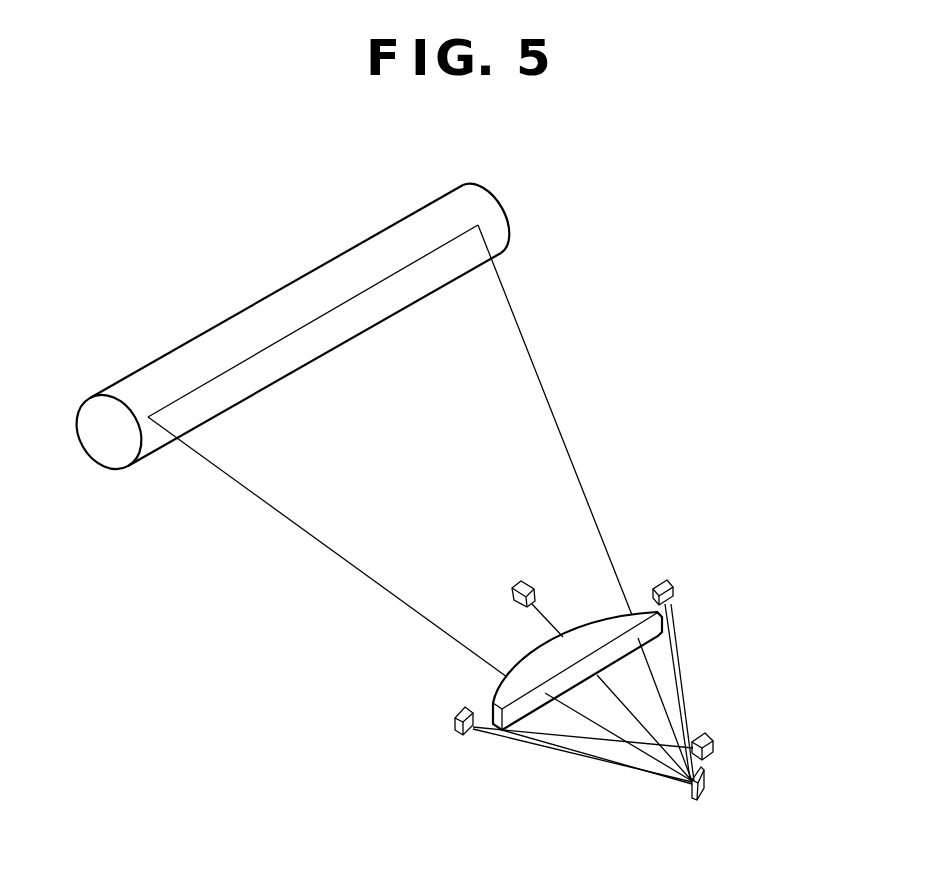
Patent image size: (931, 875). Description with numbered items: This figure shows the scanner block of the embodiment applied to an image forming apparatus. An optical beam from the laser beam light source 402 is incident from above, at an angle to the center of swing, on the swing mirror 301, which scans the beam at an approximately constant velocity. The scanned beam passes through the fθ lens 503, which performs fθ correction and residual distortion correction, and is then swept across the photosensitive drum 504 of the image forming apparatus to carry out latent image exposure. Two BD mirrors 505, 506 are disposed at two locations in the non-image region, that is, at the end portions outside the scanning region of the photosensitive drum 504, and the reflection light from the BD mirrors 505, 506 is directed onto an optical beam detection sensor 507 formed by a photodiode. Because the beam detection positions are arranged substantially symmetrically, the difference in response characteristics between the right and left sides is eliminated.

The photosensitive drum 504 is at (336, 254).
The fθ lens 503 is at (583, 620).
The laser beam light source 402 is at (516, 586).
The BD mirror 505 is at (455, 720).
The BD mirror 506 is at (667, 579).
The optical beam detection sensor 507 is at (716, 746).
The swing mirror 301 is at (705, 782).